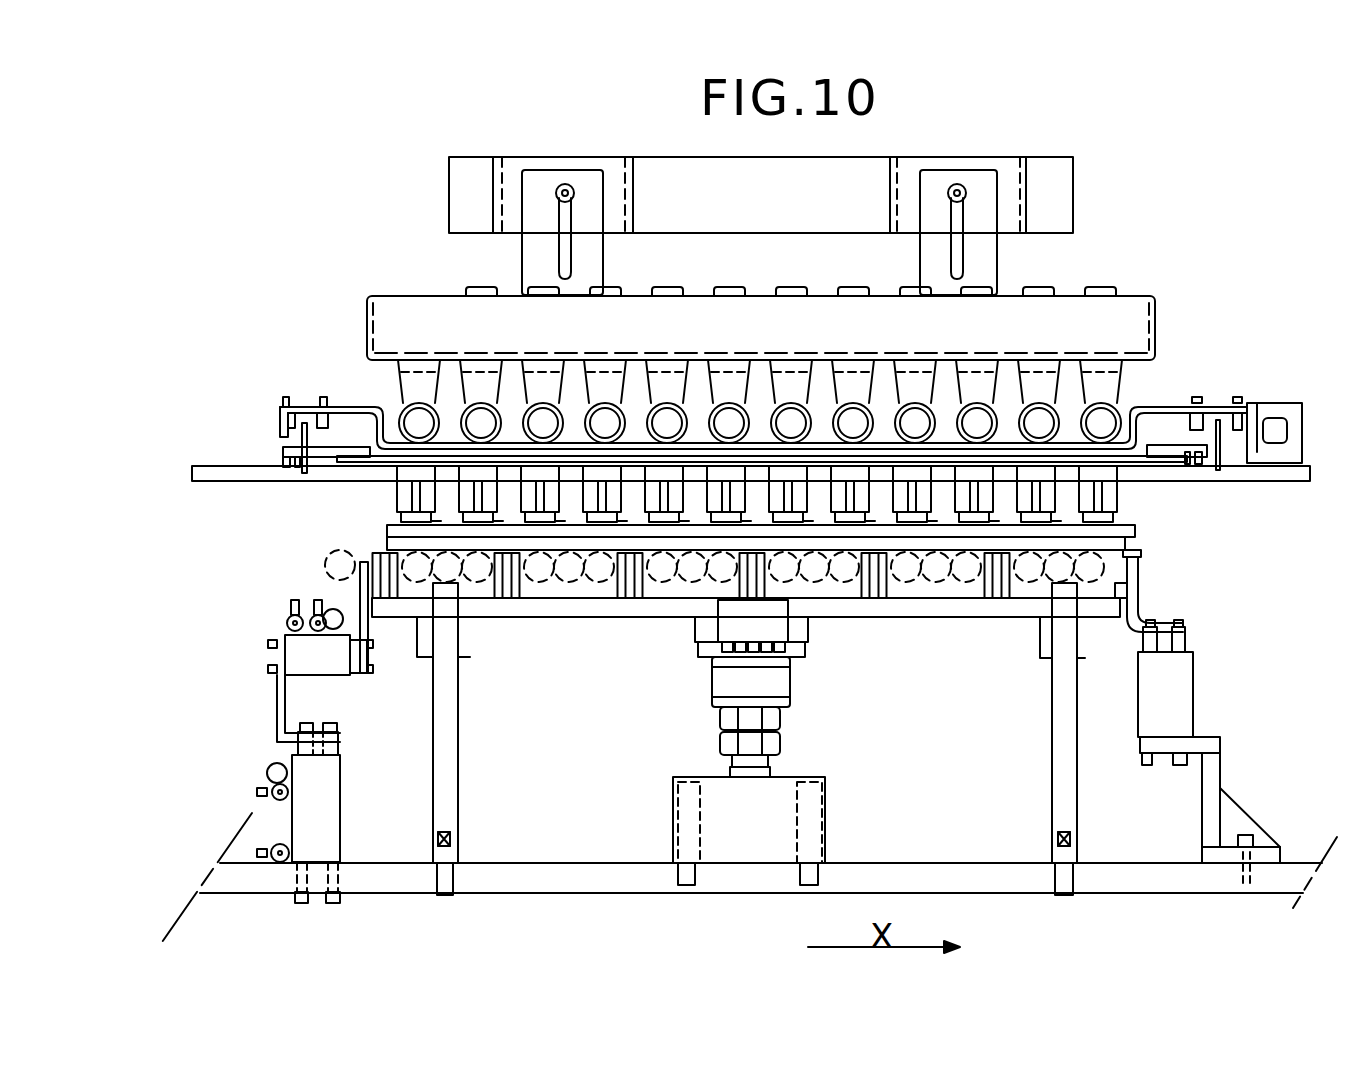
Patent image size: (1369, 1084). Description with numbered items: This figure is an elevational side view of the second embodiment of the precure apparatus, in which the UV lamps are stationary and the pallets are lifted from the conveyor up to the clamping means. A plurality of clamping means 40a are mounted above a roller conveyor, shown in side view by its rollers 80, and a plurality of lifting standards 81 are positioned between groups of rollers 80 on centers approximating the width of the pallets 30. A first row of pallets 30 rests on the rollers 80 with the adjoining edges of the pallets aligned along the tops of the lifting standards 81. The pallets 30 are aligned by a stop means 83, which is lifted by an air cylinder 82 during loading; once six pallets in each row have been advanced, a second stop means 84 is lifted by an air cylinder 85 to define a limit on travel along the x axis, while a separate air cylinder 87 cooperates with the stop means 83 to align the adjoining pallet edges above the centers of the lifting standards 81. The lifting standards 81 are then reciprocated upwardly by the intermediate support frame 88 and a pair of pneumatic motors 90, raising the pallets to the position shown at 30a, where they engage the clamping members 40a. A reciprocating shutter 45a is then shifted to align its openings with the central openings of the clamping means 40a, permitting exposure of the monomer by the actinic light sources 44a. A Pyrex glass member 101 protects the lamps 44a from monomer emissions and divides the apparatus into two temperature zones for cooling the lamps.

The actinic light source 44a is at (403, 418).
The Pyrex glass member 101 is at (340, 458).
The reciprocating shutter 45a is at (403, 462).
The clamping means 40a is at (392, 492).
The raised pallet position 30a is at (1130, 527).
The pallet 30 is at (1125, 544).
The roller 80 is at (325, 560).
The lifting standard 81 is at (390, 592).
The stop means 83 is at (1140, 607).
The second stop means 84 is at (360, 580).
The air cylinder 87 is at (300, 655).
The intermediate support frame 88 is at (545, 618).
The pneumatic motor 90 is at (780, 690).
The air cylinder 82 is at (1165, 690).
The air cylinder 85 is at (318, 800).